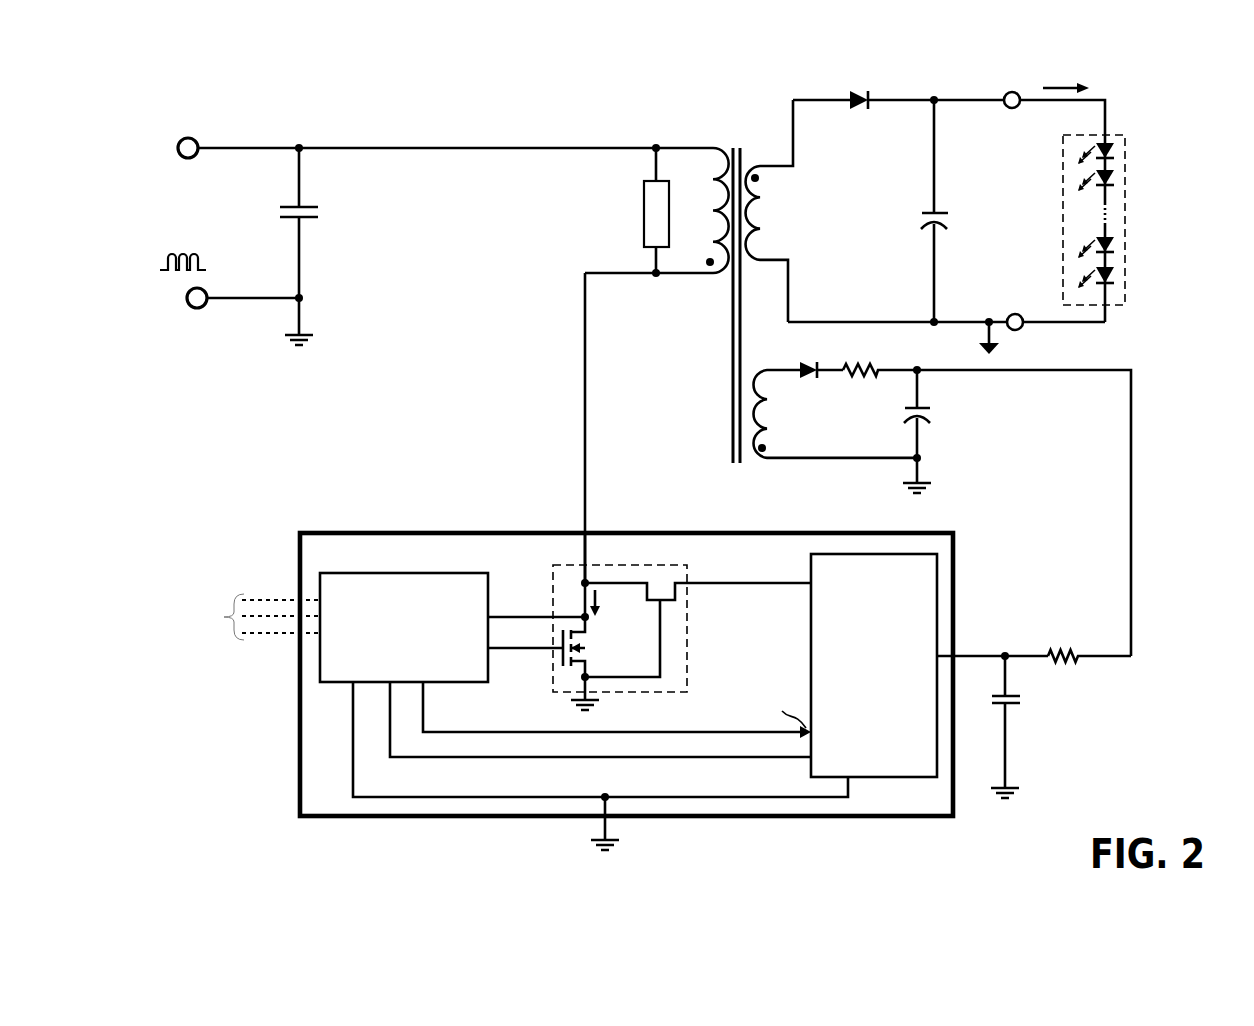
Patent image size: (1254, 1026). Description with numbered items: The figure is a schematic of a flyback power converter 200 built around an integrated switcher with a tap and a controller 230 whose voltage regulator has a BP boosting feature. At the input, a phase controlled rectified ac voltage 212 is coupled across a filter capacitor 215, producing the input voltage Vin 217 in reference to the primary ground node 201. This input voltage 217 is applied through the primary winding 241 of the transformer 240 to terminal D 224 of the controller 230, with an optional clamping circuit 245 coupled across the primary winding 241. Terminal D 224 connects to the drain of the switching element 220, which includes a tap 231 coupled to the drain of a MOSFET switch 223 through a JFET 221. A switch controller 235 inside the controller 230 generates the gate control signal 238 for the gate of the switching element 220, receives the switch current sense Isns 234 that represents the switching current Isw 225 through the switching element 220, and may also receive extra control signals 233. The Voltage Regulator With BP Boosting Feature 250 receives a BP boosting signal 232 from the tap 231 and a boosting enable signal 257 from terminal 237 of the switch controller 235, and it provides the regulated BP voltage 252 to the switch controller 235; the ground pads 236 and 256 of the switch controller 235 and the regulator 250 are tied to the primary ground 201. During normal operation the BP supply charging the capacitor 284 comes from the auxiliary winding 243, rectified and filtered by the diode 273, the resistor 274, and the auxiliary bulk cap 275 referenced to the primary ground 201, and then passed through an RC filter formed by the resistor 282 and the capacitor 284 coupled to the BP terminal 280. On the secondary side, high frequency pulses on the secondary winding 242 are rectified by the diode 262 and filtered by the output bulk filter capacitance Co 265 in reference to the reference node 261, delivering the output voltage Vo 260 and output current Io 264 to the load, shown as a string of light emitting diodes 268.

The power converter 200 is at (228, 80).
The primary ground node 201 is at (286, 341).
The phase controlled rectified ac voltage 212 is at (158, 170).
The filter capacitor 215 is at (322, 243).
The input voltage Vin 217 is at (320, 148).
The switching element 220 is at (661, 626).
The JFET 221 is at (657, 590).
The MOSFET switch 223 is at (591, 646).
The terminal D 224 is at (608, 518).
The switching current Isw 225 is at (615, 617).
The controller 230 is at (292, 707).
The tap 231 is at (704, 612).
The BP boosting signal 232 is at (805, 591).
The extra control signals 233 is at (226, 597).
The switch current sense Isns 234 is at (494, 620).
The switch controller 235 is at (404, 627).
The ground pad 236 is at (346, 700).
The terminal 237 is at (427, 687).
The gate control signal 238 is at (494, 652).
The transformer 240 is at (733, 140).
The primary winding 241 is at (705, 185).
The secondary winding 242 is at (768, 228).
The auxiliary winding 243 is at (770, 402).
The clamping circuit 245 is at (635, 180).
The Voltage Regulator With BP Boosting Feature 250 is at (874, 665).
The regulated BP voltage 252 is at (803, 760).
The ground pad 256 is at (876, 787).
The boosting enable signal 257 is at (600, 719).
The output voltage Vo 260 is at (1028, 112).
The reference node 261 is at (1003, 351).
The rectifying diode 262 is at (856, 82).
The output current Io 264 is at (1097, 64).
The output bulk filter capacitance Co 265 is at (918, 213).
The string of light emitting diodes 268 is at (1125, 288).
The diode 273 is at (808, 355).
The resistor 274 is at (872, 355).
The auxiliary bulk cap 275 is at (933, 417).
The BP terminal 280 is at (960, 653).
The resistor 282 is at (1066, 670).
The capacitor 284 is at (1017, 716).